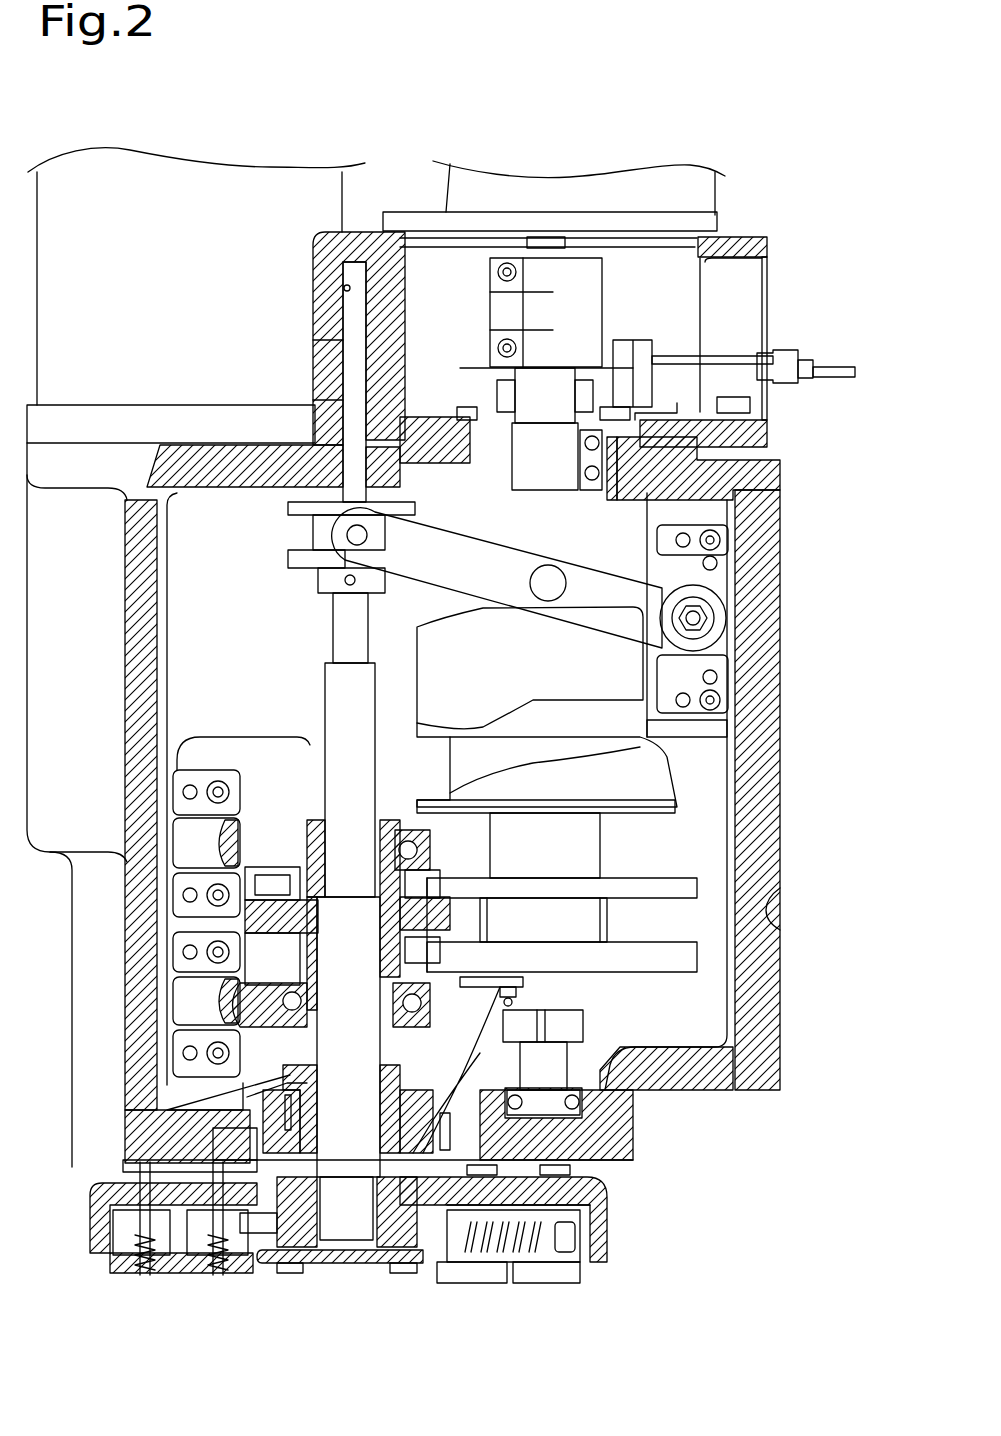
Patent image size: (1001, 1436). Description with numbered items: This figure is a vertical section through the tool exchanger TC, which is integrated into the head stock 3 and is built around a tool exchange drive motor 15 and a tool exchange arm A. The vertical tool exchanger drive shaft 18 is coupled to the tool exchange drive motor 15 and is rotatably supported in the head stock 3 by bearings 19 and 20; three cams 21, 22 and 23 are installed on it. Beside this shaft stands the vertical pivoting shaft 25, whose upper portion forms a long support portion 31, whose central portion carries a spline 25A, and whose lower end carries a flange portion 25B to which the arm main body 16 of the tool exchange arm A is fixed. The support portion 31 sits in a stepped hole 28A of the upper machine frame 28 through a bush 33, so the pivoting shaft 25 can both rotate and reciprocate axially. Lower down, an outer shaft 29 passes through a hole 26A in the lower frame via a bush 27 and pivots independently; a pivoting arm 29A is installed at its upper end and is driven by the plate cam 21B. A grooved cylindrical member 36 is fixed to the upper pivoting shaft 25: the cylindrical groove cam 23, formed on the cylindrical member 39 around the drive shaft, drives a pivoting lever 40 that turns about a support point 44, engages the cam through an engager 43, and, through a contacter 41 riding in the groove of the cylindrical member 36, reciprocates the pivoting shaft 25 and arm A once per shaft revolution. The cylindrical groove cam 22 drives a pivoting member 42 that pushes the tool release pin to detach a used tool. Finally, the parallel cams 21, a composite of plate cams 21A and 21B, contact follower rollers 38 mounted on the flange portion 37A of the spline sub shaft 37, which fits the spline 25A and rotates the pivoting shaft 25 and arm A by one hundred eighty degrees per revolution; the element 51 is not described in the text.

The head stock 3 is at (753, 1092).
The tool exchange drive motor 15 is at (608, 306).
The tool exchange arm main body 16 is at (607, 1193).
The tool exchanger drive shaft 18 is at (580, 378).
The bearing 19 is at (620, 468).
The bearing 20 is at (580, 1103).
The parallel cams 21 is at (832, 873).
The plate cam 21A is at (697, 890).
The plate cam 21B is at (697, 955).
The cylindrical groove cam 22 is at (727, 747).
The cylindrical groove cam 23 is at (727, 557).
The pivoting shaft 25 is at (296, 637).
The spline 25A is at (322, 688).
The flange portion 25B is at (350, 1157).
The hole 26A is at (195, 1142).
The bush 27 is at (377, 1113).
The upper machine frame 28 is at (312, 253).
The stepped hole 28A is at (345, 288).
The outer shaft 29 is at (297, 1073).
The pivoting arm 29A is at (577, 1013).
The support portion 31 is at (313, 347).
The bush 33 is at (313, 402).
The cylindrical member 36 is at (290, 567).
The spline sub shaft 37 is at (318, 817).
The flange portion 37A is at (453, 917).
The follower rollers 38 is at (430, 890).
The cylindrical member 39 is at (677, 812).
The pivoting lever 40 is at (730, 617).
The contacter 41 is at (345, 535).
The pivoting member 42 is at (390, 677).
The engager 43 is at (556, 602).
The support point 44 is at (727, 633).
The bottom plate 51 is at (303, 1263).
The tool exchange arm A is at (386, 1290).
The tool exchanger TC is at (523, 115).